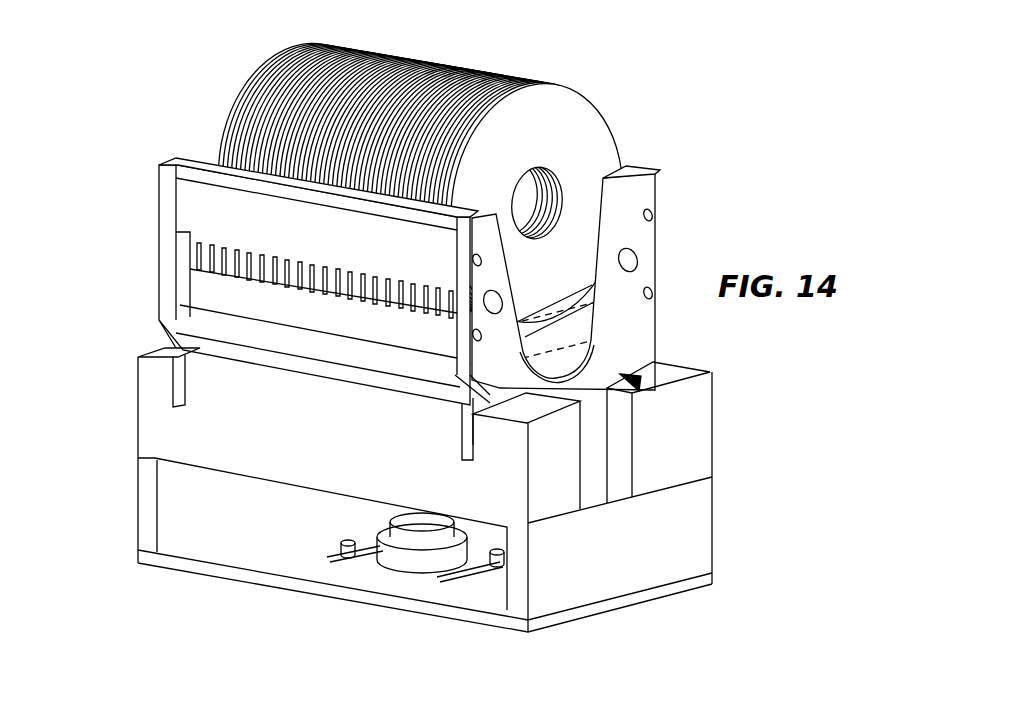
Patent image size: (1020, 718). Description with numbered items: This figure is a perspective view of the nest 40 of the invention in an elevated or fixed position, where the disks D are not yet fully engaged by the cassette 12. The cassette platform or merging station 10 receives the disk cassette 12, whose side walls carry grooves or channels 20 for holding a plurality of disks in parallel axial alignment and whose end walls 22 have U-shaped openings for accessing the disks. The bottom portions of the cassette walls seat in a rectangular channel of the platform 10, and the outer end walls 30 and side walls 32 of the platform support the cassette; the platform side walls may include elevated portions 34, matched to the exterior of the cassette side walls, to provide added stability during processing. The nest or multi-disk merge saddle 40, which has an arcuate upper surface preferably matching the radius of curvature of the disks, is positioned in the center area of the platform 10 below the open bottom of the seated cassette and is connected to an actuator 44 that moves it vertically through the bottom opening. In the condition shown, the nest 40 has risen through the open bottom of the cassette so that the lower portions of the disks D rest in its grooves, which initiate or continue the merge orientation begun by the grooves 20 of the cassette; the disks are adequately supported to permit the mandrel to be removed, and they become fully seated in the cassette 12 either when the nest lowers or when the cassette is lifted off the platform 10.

The disc stack D is at (580, 119).
The cassette platform or merging station 10 is at (454, 492).
The disk cassette or disk carrier 12 is at (611, 308).
The grooves or channels 20 is at (324, 281).
The end walls 22 is at (645, 270).
The outer end walls 30 is at (137, 383).
The side walls 32 is at (285, 425).
The elevated portions 34 is at (197, 370).
The nest or multi-disk merge saddle 40 is at (568, 322).
The actuator 44 is at (410, 520).